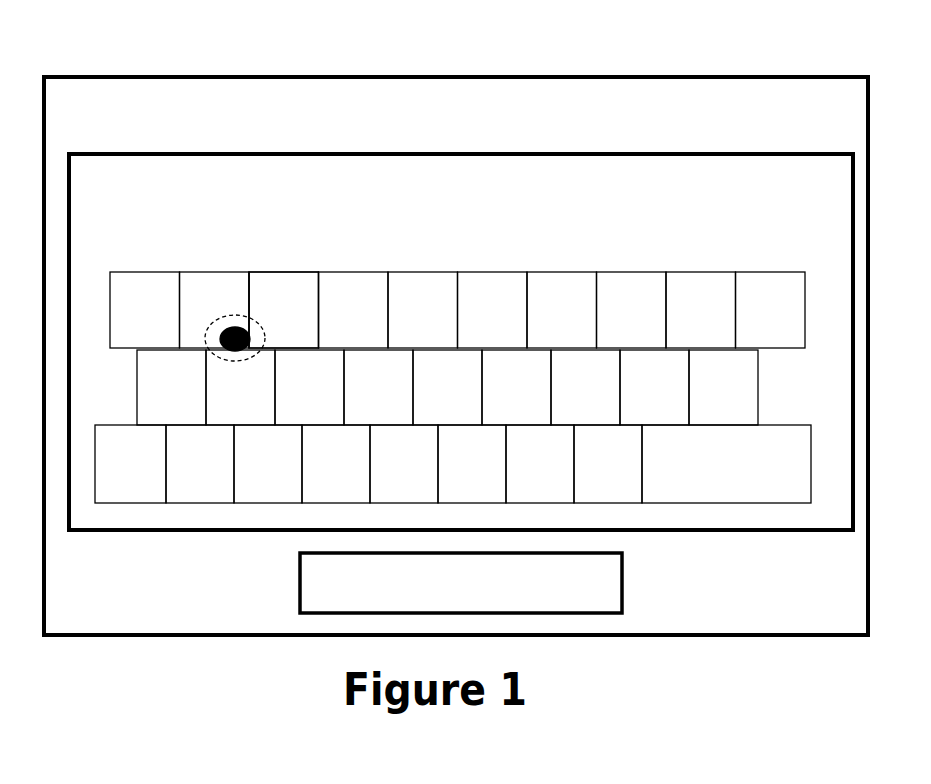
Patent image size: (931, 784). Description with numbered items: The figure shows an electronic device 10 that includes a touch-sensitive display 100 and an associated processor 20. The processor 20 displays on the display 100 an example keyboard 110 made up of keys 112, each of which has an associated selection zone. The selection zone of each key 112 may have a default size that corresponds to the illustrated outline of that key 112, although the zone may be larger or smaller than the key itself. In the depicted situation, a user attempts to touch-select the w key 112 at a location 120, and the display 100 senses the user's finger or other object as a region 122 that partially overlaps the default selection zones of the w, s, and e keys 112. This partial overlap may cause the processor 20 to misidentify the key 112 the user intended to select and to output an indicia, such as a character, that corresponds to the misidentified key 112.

The electronic device 10 is at (456, 331).
The touch-sensitive display 100 is at (461, 319).
The keyboard 110 is at (453, 350).
The key 112 is at (248, 275).
The location 120 is at (191, 289).
The region 122 is at (173, 302).
The processor 20 is at (538, 594).